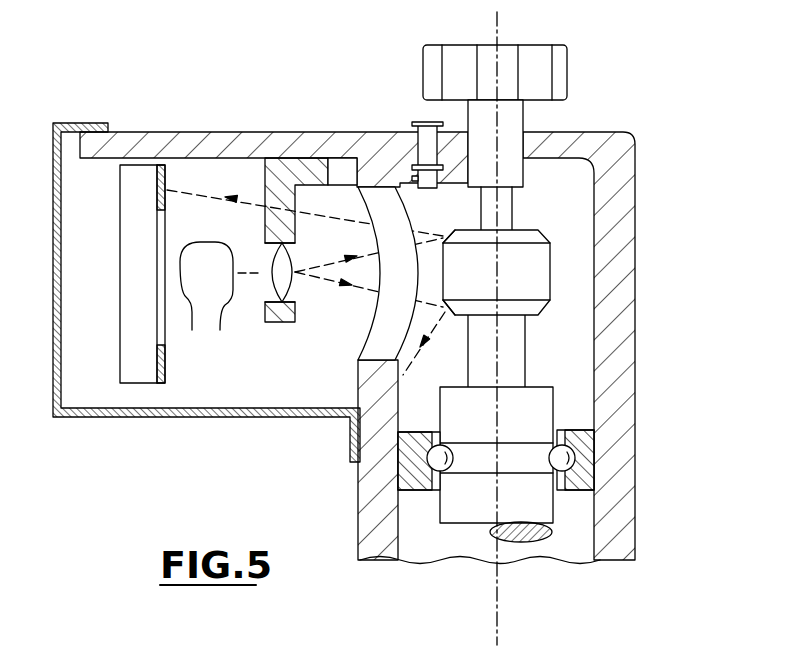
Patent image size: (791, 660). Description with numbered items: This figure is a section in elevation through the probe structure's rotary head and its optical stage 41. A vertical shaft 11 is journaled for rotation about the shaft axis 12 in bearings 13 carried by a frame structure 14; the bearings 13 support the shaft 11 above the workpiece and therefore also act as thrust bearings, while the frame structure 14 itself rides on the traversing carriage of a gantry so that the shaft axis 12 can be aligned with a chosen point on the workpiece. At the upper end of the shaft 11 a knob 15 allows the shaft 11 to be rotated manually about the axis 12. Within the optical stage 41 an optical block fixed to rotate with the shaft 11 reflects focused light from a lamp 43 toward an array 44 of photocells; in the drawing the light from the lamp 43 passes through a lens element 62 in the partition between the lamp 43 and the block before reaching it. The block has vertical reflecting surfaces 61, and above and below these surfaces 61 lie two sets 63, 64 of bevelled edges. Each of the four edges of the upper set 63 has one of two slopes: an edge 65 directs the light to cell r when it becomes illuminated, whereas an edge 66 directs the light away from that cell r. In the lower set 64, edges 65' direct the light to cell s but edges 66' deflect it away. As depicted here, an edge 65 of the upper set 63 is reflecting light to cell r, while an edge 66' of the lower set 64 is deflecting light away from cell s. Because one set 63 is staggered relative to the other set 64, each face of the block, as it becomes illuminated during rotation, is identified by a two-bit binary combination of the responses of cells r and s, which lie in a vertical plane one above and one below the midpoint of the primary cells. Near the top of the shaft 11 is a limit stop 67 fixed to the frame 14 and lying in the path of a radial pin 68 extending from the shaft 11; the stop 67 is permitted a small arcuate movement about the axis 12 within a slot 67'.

The vertical shaft 11 is at (532, 510).
The shaft axis 12 is at (497, 598).
The bearings 13 is at (577, 492).
The frame structure 14 is at (635, 312).
The knob 15 is at (567, 68).
The optical stage 41 is at (92, 244).
The lamp 43 is at (227, 292).
The array of photocells 44 is at (128, 303).
The vertical reflecting surfaces 61 is at (552, 279).
The condenser lens 62 is at (296, 288).
The upper set of bevelled edges 63 is at (560, 255).
The lower set of bevelled edges 64 is at (560, 300).
The edge directing light to cell r 65 is at (455, 218).
The edge directing light to cell s 65' is at (435, 337).
The edge directing light away from cell r 66 is at (496, 261).
The edge directing light away from cell s 66' is at (496, 281).
The limit stop 67 is at (375, 273).
The slot 67' is at (370, 139).
The radial pin 68 is at (455, 128).
The cell r is at (166, 185).
The cell s is at (167, 356).